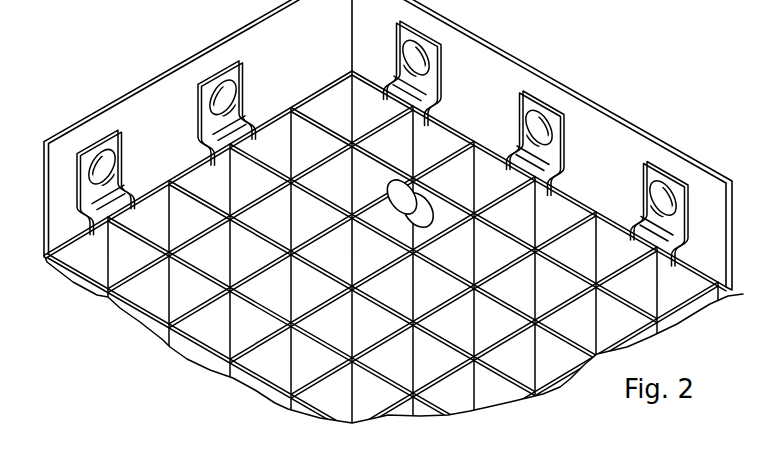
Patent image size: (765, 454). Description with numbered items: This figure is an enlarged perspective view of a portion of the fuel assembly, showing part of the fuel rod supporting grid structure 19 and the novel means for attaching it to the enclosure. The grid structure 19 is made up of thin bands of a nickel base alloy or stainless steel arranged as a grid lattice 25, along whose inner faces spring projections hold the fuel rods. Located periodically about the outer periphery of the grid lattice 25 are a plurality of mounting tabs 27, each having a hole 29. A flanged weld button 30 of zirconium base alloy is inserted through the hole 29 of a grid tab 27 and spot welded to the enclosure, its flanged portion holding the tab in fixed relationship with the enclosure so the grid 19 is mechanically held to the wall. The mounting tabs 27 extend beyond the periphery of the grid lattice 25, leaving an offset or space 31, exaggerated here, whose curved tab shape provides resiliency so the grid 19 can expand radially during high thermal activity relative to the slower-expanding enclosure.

The fuel rod supporting grid structure 19 is at (305, 97).
The grid lattice 25 is at (176, 288).
The mounting tab 27 is at (198, 98).
The hole 29 is at (109, 162).
The flanged weld button 30 is at (399, 199).
The offset or space 31 is at (681, 240).